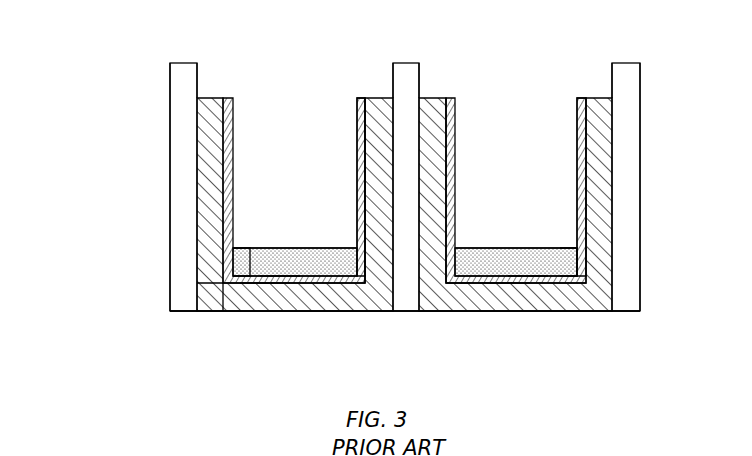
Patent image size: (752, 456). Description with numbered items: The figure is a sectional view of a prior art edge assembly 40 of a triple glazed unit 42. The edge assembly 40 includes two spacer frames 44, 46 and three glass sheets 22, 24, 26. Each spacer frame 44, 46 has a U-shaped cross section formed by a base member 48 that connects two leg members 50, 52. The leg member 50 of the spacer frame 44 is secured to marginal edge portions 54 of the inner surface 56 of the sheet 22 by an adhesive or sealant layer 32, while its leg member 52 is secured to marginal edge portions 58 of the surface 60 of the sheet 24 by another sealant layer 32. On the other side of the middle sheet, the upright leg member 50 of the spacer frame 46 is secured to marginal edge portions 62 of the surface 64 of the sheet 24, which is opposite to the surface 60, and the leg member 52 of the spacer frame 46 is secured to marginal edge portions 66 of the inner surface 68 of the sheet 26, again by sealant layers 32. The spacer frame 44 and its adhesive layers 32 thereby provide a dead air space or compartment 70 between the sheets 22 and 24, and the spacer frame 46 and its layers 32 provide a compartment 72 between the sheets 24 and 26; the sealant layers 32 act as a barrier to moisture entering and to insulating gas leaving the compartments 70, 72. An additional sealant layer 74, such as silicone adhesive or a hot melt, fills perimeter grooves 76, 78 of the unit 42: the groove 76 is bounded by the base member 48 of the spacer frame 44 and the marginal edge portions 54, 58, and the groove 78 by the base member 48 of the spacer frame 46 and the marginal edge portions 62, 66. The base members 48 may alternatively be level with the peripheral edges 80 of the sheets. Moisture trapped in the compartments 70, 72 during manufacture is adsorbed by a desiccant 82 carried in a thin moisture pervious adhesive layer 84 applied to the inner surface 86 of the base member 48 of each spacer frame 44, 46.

The glass sheet 22 is at (191, 68).
The glass sheet 24 is at (408, 72).
The glass sheet 26 is at (626, 67).
The adhesive or sealant layer 32 is at (212, 98).
The edge assembly 40 is at (348, 318).
The triple glazed unit 42 is at (113, 103).
The spacer frame 44 is at (265, 303).
The spacer frame 46 is at (507, 300).
The base member 48 is at (332, 248).
The leg member 50 is at (233, 153).
The leg member 52 is at (357, 153).
The marginal edge portions 54 is at (197, 206).
The inner surface 56 is at (199, 72).
The marginal edge portions 58 is at (380, 183).
The surface 60 is at (390, 78).
The marginal edge portions 62 is at (420, 172).
The surface 64 is at (422, 70).
The marginal edge portions 66 is at (603, 160).
The inner surface 68 is at (612, 68).
The compartment 70 is at (296, 110).
The compartment 72 is at (512, 118).
The sealant layer 74 is at (320, 312).
The perimeter groove 76 is at (225, 312).
The perimeter groove 78 is at (472, 300).
The peripheral edges 80 is at (175, 312).
The desiccant 82 is at (287, 248).
The moisture pervious adhesive layer 84 is at (255, 248).
The inner surface 86 is at (280, 300).